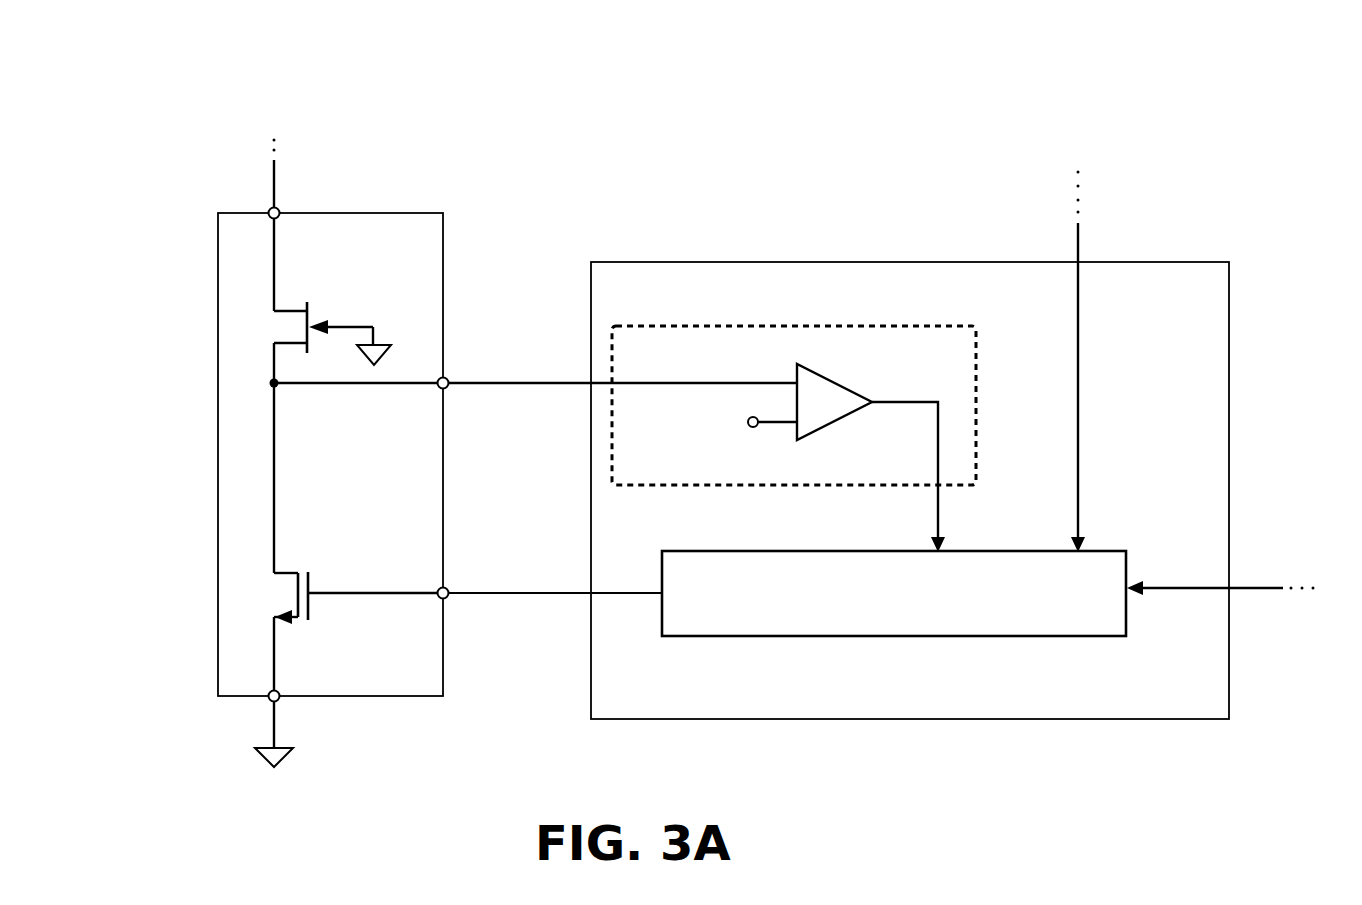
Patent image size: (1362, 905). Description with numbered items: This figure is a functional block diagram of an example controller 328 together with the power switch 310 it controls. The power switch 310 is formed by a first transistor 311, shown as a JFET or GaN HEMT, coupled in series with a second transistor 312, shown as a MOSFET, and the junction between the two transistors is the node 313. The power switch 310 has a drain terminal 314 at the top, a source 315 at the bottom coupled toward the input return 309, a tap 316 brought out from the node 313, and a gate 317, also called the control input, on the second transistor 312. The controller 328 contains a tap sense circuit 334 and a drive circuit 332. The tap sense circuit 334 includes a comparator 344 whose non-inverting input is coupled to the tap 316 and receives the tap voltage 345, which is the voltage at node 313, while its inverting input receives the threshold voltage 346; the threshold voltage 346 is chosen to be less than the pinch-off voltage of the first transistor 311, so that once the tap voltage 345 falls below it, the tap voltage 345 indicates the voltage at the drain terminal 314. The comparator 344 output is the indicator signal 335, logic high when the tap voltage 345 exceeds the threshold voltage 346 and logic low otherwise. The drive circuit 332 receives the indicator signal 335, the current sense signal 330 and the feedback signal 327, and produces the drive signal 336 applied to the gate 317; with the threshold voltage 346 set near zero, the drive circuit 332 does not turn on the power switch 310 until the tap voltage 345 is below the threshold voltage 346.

The controller 328 is at (1270, 76).
The power switch 310 is at (216, 452).
The drain terminal 314 is at (268, 208).
The first transistor Q1 311 is at (317, 308).
The input return 309 is at (403, 331).
The node 313 is at (280, 392).
The tap 316 is at (457, 375).
The second transistor Q2 312 is at (312, 582).
The gate 317 is at (457, 603).
The source 315 is at (262, 703).
The drive signal U_DR 336 is at (533, 548).
The tap sense circuit 334 is at (963, 321).
The tap voltage V_TAP 345 is at (722, 344).
The threshold voltage V_TH 346 is at (702, 440).
The comparator 344 is at (853, 413).
The indicator signal U_Z 335 is at (948, 513).
The drive circuit 332 is at (738, 645).
The current sense signal 330 is at (1063, 190).
The feedback signal U_FB 327 is at (1303, 607).